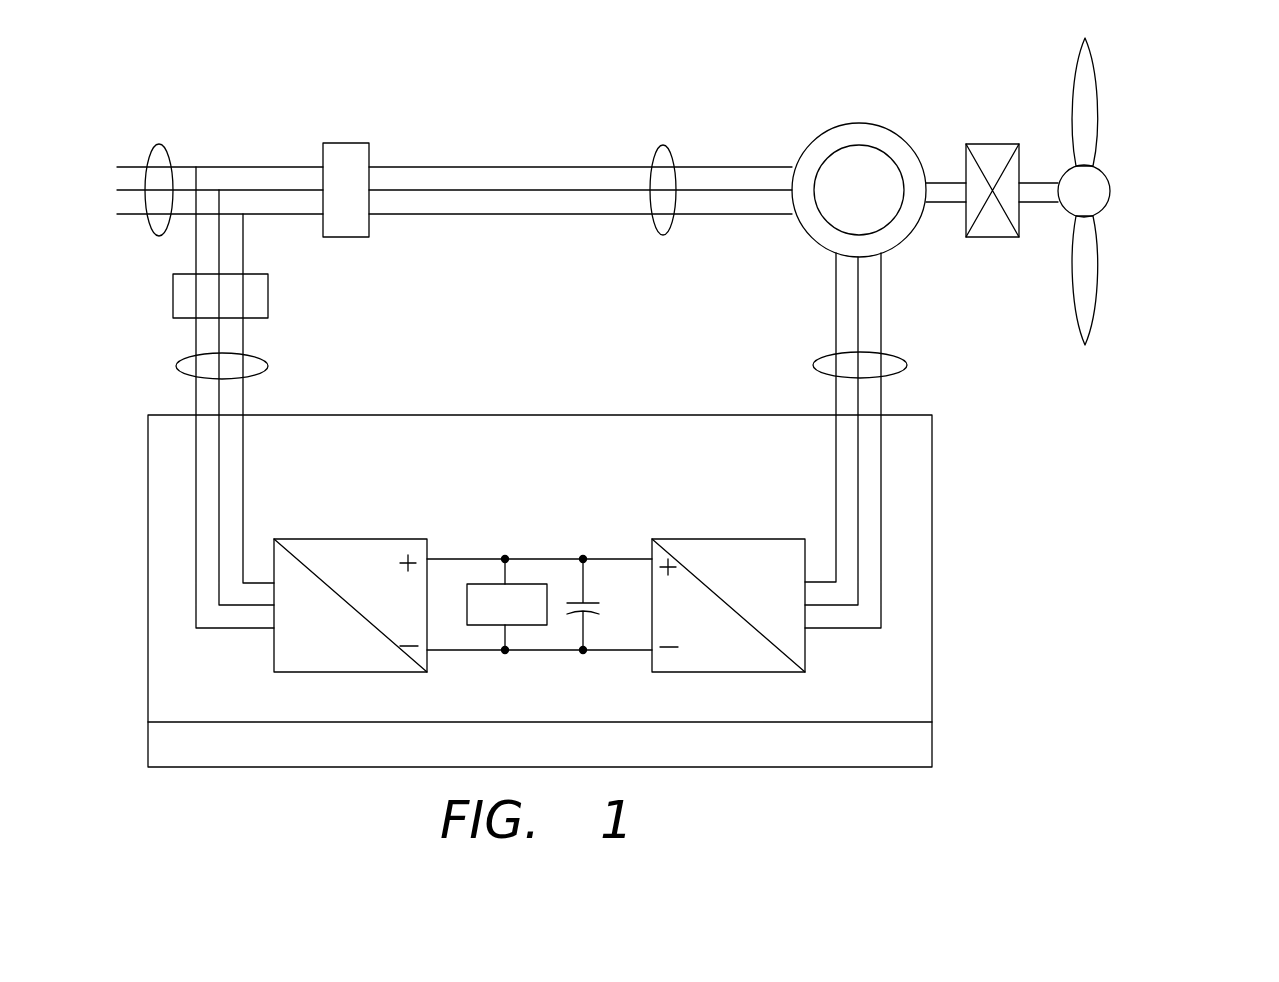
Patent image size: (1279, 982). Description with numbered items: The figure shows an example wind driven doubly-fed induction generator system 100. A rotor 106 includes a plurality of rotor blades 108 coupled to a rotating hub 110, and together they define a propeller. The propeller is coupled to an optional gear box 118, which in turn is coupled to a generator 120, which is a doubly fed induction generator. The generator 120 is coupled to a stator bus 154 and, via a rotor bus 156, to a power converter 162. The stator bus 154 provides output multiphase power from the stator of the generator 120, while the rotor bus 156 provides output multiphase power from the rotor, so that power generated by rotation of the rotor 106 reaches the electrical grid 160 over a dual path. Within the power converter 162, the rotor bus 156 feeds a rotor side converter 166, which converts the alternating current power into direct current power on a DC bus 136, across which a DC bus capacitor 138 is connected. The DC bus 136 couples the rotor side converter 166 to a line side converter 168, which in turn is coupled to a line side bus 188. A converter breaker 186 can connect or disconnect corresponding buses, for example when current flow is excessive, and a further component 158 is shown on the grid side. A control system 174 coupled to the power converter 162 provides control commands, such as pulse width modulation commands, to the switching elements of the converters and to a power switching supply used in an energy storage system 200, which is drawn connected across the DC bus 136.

The wind driven doubly-fed induction generator system 100 is at (497, 107).
The rotor 106 is at (1162, 108).
The rotor blades 108 is at (1100, 97).
The rotating hub 110 is at (1110, 195).
The gear box 118 is at (990, 144).
The doubly fed induction generator 120 is at (857, 123).
The DC bus 136 is at (604, 558).
The DC bus capacitor 138 is at (580, 613).
The stator bus 154 is at (662, 145).
The rotor bus 156 is at (907, 366).
The transformer / breaker 158 is at (346, 143).
The electrical grid 160 is at (160, 144).
The power converter 162 is at (932, 558).
The rotor side converter 166 is at (805, 645).
The line side converter 168 is at (274, 655).
The control system 174 is at (932, 745).
The converter breaker 186 is at (173, 298).
The line side bus 188 is at (175, 370).
The energy storage system 200 is at (483, 584).